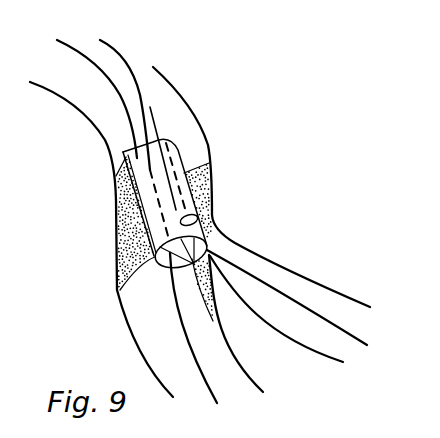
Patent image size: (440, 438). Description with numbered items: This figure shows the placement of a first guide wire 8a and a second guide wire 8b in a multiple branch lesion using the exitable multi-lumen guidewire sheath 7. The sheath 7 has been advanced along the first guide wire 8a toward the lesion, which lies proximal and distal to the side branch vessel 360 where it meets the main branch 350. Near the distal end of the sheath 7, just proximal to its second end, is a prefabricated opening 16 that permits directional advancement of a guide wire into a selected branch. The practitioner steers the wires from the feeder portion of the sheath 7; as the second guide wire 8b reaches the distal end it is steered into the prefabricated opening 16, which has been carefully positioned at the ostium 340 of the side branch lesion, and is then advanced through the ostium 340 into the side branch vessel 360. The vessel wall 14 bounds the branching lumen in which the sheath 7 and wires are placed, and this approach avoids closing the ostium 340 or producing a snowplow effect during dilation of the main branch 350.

The first guide wire 8a is at (110, 83).
The second guide wire 8b is at (126, 58).
The body vessel 14 is at (188, 122).
The exitable multi-lumen guidewire sheath 7 is at (128, 161).
The prefabricated opening 16 is at (188, 216).
The ostium 340 is at (222, 240).
The side branch vessel 360 is at (322, 302).
The main branch 350 is at (143, 323).